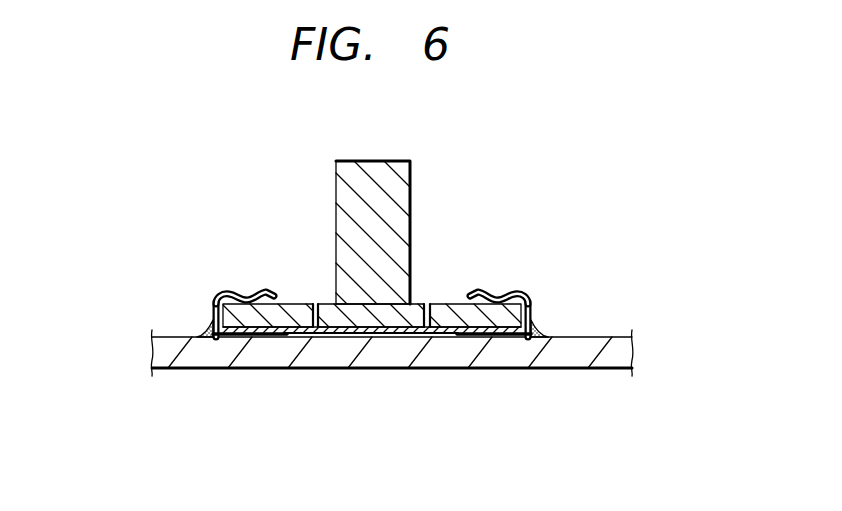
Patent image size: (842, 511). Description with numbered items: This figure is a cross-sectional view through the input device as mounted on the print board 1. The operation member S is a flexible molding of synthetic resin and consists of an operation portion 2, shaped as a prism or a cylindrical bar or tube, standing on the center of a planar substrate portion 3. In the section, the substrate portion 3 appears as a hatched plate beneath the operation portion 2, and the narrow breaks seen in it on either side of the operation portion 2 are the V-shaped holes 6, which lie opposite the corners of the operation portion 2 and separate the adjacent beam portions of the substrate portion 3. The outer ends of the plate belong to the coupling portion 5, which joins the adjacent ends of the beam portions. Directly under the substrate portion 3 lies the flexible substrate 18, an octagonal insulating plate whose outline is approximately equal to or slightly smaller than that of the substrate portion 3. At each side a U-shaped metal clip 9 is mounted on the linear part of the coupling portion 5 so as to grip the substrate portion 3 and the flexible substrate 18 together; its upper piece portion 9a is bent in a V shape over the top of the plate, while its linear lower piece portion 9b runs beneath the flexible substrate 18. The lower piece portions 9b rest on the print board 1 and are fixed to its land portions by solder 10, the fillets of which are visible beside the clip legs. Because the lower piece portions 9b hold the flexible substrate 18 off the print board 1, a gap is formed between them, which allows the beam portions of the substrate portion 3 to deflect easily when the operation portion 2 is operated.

The print board 1 is at (613, 358).
The operation portion 2 is at (377, 172).
The substrate portion 3 is at (295, 300).
The coupling portion 5 is at (233, 292).
The V-shaped hole 6 is at (321, 303).
The clip 9 is at (361, 307).
The upper piece portion 9a is at (273, 291).
The lower piece portion 9b is at (247, 338).
The solder 10 is at (548, 328).
The flexible substrate 18 is at (432, 338).
The operation member S is at (414, 197).